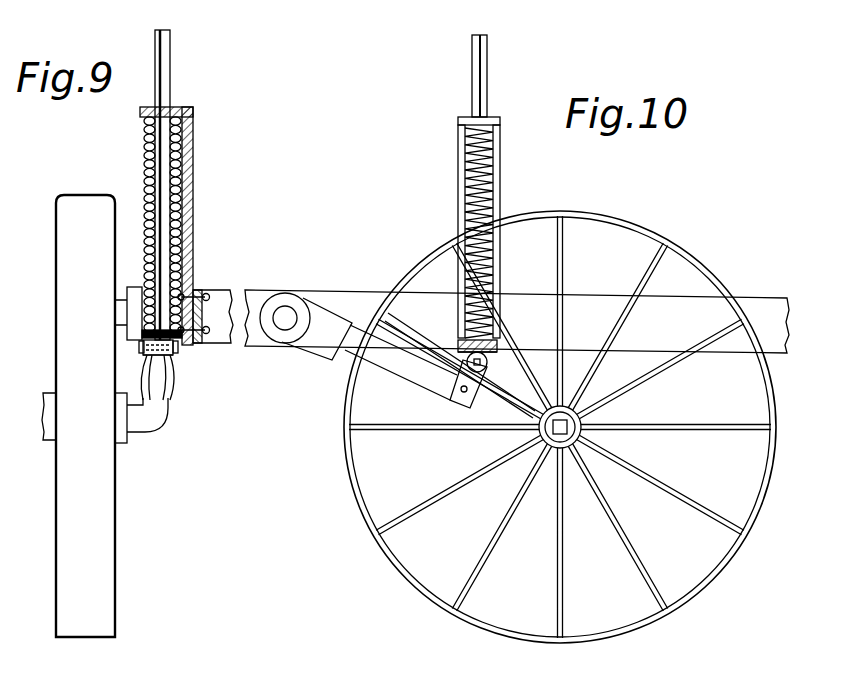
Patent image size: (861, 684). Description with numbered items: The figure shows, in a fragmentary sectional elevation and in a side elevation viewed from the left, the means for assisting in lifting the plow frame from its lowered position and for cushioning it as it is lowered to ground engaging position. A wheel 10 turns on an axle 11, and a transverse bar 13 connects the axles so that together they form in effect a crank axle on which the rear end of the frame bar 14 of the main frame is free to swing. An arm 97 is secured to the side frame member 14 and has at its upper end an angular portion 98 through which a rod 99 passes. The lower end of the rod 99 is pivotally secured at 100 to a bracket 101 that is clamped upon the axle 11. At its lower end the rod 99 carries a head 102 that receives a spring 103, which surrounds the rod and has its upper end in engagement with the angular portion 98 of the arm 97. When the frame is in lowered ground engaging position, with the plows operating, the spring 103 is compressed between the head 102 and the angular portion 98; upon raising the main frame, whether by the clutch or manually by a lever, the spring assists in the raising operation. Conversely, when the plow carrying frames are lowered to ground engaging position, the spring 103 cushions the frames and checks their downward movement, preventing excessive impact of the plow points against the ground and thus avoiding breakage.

In FIG. 9, the wheel 10 is at (64, 236).
In FIG. 10, the wheel 10 is at (688, 253).
In FIG. 9, the axle 11 is at (160, 413).
In FIG. 10, the axle 11 is at (393, 365).
In FIG. 10, the transverse bar 13 is at (286, 316).
In FIG. 9, the frame bar 14 is at (201, 293).
In FIG. 10, the frame bar 14 is at (579, 306).
In FIG. 9, the arm 97 is at (195, 171).
In FIG. 10, the arm 97 is at (501, 206).
In FIG. 9, the angular portion 98 is at (140, 109).
In FIG. 10, the angular portion 98 is at (500, 121).
In FIG. 9, the rod 99 is at (172, 86).
In FIG. 10, the rod 99 is at (488, 101).
In FIG. 9, the pivot 100 is at (178, 348).
In FIG. 10, the pivot 100 is at (460, 346).
In FIG. 9, the bracket 101 is at (176, 371).
In FIG. 10, the bracket 101 is at (456, 388).
In FIG. 9, the head 102 is at (140, 330).
In FIG. 10, the head 102 is at (496, 346).
In FIG. 9, the spring 103 is at (145, 153).
In FIG. 10, the spring 103 is at (491, 186).